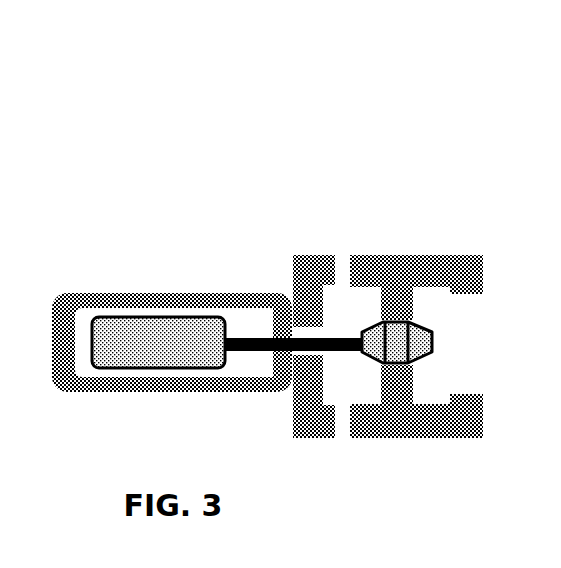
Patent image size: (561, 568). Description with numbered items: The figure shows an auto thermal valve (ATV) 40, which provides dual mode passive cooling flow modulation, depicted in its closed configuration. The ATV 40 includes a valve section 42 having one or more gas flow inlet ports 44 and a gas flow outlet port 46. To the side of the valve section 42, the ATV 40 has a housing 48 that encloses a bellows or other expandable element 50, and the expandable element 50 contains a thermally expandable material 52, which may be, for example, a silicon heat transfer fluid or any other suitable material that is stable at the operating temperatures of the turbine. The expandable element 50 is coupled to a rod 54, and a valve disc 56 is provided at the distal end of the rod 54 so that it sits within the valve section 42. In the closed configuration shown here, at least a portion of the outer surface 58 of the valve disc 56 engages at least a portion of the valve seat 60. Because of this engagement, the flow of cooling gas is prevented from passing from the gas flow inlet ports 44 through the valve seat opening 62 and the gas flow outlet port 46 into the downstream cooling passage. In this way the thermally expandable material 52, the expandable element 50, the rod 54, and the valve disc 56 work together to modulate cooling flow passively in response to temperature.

The auto thermal valve 40 is at (222, 218).
The valve section 42 is at (407, 250).
The gas flow inlet ports 44 is at (340, 257).
The gas flow outlet port 46 is at (492, 336).
The housing 48 is at (93, 392).
The expandable element 50 is at (110, 317).
The thermally expandable material 52 is at (158, 343).
The rod 54 is at (250, 352).
The valve disc 56 is at (461, 391).
The outer surface 58 is at (422, 353).
The valve seat 60 is at (397, 366).
The valve seat opening 62 is at (421, 320).